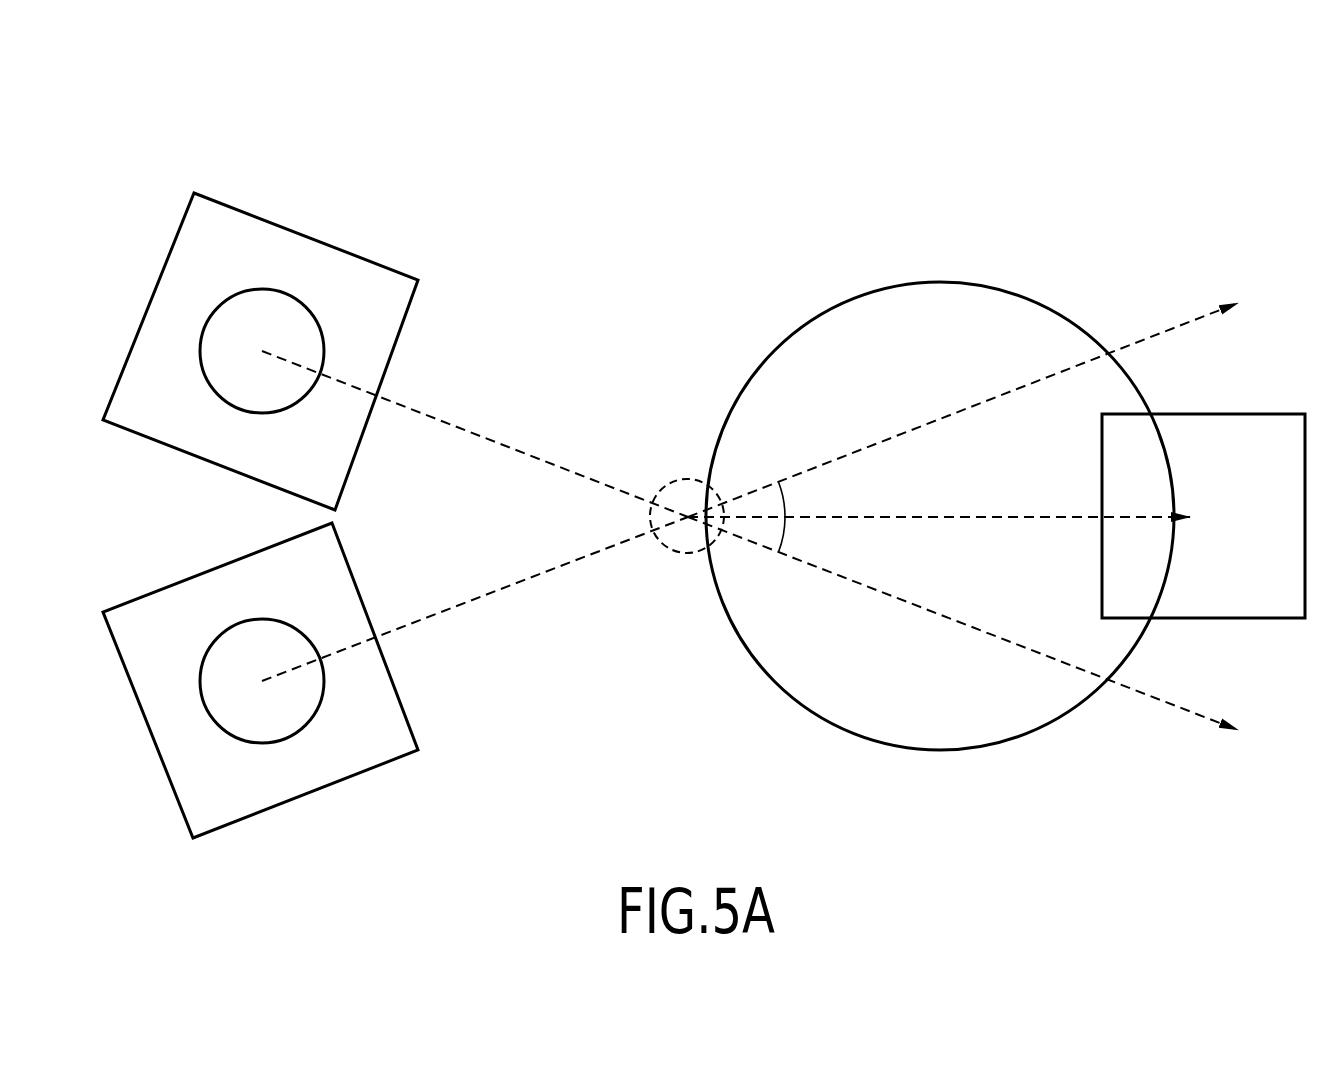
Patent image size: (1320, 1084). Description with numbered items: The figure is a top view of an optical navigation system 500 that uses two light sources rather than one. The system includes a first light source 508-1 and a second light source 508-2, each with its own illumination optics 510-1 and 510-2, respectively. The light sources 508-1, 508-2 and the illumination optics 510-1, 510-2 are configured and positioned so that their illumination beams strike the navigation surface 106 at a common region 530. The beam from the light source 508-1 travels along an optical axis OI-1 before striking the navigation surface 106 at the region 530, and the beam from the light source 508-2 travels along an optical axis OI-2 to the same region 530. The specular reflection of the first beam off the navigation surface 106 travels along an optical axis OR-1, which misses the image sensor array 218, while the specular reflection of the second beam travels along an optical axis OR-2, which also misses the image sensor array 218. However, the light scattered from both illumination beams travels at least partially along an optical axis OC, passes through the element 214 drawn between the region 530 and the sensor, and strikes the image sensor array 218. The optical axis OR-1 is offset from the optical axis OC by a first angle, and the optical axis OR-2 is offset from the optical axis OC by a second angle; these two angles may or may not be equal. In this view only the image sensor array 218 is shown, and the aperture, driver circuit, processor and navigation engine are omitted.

The optical navigation system 500 is at (1192, 126).
The illumination optics 510-1 is at (339, 248).
The illumination optics 510-2 is at (339, 784).
The light source 508-1 is at (233, 296).
The light source 508-2 is at (234, 738).
The navigation surface 106 is at (668, 413).
The common region 530 is at (682, 552).
The lens surface 214 is at (878, 288).
The image sensor array 218 is at (1228, 413).
The optical axis OI-1 is at (451, 421).
The optical axis OI-2 is at (451, 608).
The optical axis OR-1 is at (1176, 704).
The optical axis OR-2 is at (1176, 327).
The optical axis OC is at (933, 516).